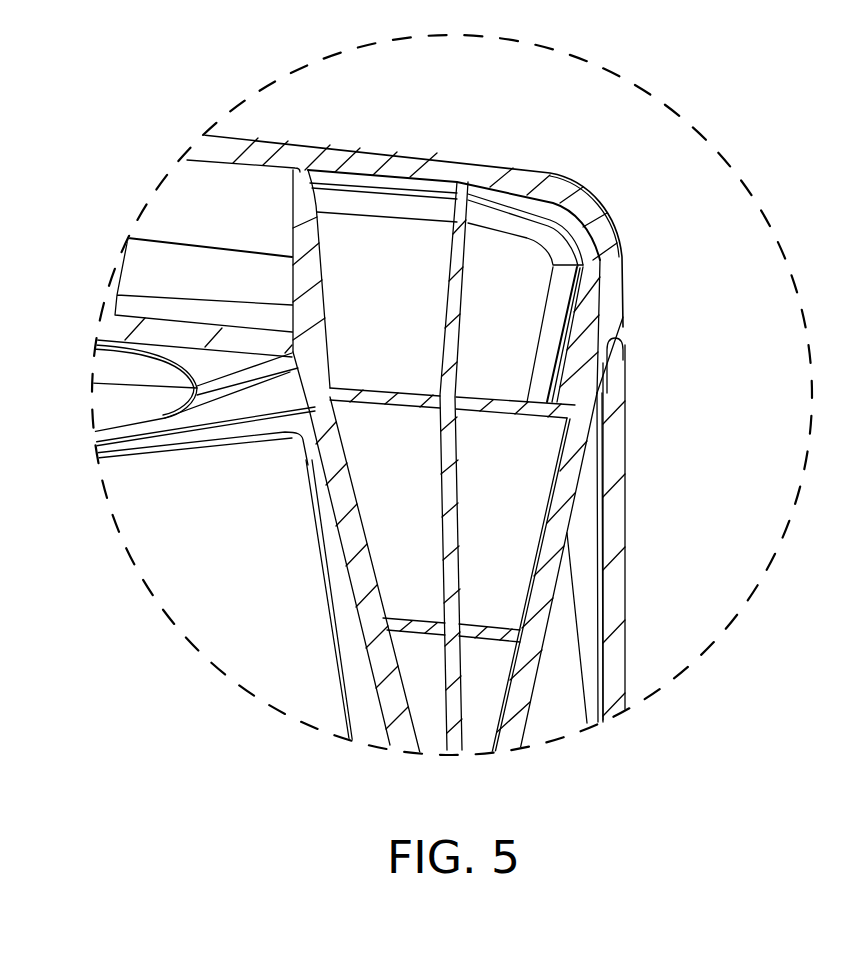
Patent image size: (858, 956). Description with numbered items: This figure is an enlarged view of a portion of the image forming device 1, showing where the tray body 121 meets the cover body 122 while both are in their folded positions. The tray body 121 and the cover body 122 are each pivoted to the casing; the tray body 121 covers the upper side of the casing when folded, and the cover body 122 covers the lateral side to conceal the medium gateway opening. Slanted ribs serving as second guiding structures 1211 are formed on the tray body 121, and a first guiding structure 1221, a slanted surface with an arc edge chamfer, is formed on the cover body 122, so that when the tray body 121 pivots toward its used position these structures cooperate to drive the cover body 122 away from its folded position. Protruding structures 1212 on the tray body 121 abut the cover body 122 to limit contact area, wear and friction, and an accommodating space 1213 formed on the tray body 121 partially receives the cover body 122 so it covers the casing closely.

The image forming device 1 is at (766, 90).
The tray body 121 is at (369, 163).
The second guiding structure 1211 is at (623, 330).
The protruding structure 1212 is at (597, 207).
The accommodating space 1213 is at (612, 362).
The cover body 122 is at (615, 585).
The first guiding structure 1221 is at (608, 386).